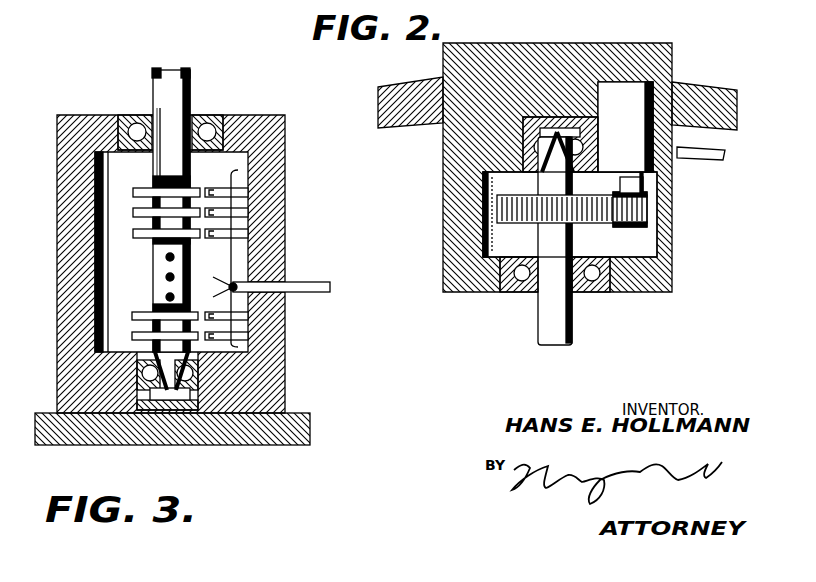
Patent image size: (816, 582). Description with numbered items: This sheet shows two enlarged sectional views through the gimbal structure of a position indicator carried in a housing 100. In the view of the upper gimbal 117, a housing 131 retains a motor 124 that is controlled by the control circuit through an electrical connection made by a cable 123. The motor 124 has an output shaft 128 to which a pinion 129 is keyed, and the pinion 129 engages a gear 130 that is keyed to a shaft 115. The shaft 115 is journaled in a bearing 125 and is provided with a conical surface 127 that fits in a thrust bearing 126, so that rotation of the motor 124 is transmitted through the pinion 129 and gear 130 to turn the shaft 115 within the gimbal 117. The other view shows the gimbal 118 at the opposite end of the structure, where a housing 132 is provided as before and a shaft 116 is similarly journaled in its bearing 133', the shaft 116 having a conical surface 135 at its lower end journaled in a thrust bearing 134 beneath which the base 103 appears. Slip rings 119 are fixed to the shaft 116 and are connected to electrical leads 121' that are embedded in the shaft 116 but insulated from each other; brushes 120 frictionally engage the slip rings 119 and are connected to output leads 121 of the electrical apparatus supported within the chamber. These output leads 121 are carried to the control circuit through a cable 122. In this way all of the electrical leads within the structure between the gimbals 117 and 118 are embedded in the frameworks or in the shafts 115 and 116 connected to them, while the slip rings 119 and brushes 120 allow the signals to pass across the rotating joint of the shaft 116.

In FIG. 2, the housing 100 is at (707, 77).
In FIG. 3, the base plate 103 is at (302, 446).
In FIG. 2, the shaft 115 is at (556, 325).
In FIG. 3, the shaft 116 is at (165, 70).
In FIG. 2, the upper gimbal 117 is at (438, 196).
In FIG. 3, the gimbal 118 is at (290, 197).
In FIG. 3, the slip rings 119 is at (133, 233).
In FIG. 3, the brushes 120 is at (215, 190).
In FIG. 3, the output leads 121 is at (285, 258).
In FIG. 3, the electrical leads 121' is at (206, 136).
In FIG. 3, the cable 122 is at (314, 292).
In FIG. 2, the cable 123 is at (710, 165).
In FIG. 2, the motor 124 is at (628, 82).
In FIG. 2, the bearing 125 is at (537, 290).
In FIG. 2, the thrust bearing 126 is at (558, 130).
In FIG. 2, the conical surface 127 is at (522, 163).
In FIG. 2, the output shaft 128 is at (648, 192).
In FIG. 2, the pinion 129 is at (648, 225).
In FIG. 2, the gear 130 is at (589, 226).
In FIG. 2, the housing 131 is at (497, 50).
In FIG. 3, the housing 132 is at (288, 352).
In FIG. 3, the upper bearing 133' is at (149, 115).
In FIG. 3, the thrust bearing 134 is at (190, 392).
In FIG. 3, the conical surface 135 is at (158, 392).